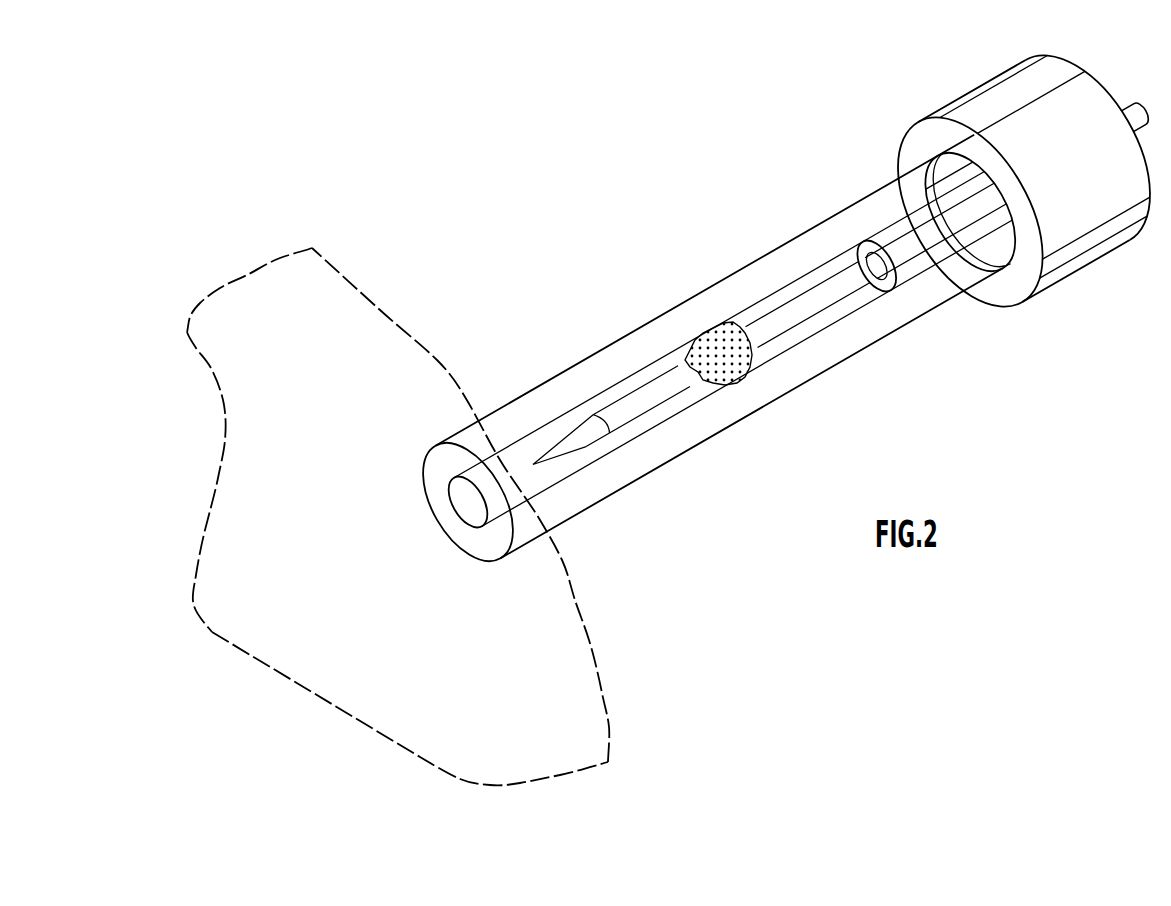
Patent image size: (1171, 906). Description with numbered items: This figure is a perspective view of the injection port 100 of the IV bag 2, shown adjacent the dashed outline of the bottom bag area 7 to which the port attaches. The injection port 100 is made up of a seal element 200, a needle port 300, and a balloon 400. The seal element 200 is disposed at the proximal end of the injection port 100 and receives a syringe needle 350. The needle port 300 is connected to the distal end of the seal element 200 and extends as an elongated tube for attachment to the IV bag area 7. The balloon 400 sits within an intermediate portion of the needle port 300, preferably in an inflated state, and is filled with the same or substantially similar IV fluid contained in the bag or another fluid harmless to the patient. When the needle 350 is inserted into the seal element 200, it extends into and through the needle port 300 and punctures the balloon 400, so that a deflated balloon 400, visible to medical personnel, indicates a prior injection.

The IV bag 2 is at (398, 456).
The bottom bag area 7 is at (365, 287).
The injection port 100 is at (778, 315).
The seal element 200 is at (1019, 176).
The needle port 300 is at (722, 355).
The syringe needle 350 is at (763, 323).
The balloon 400 is at (733, 360).